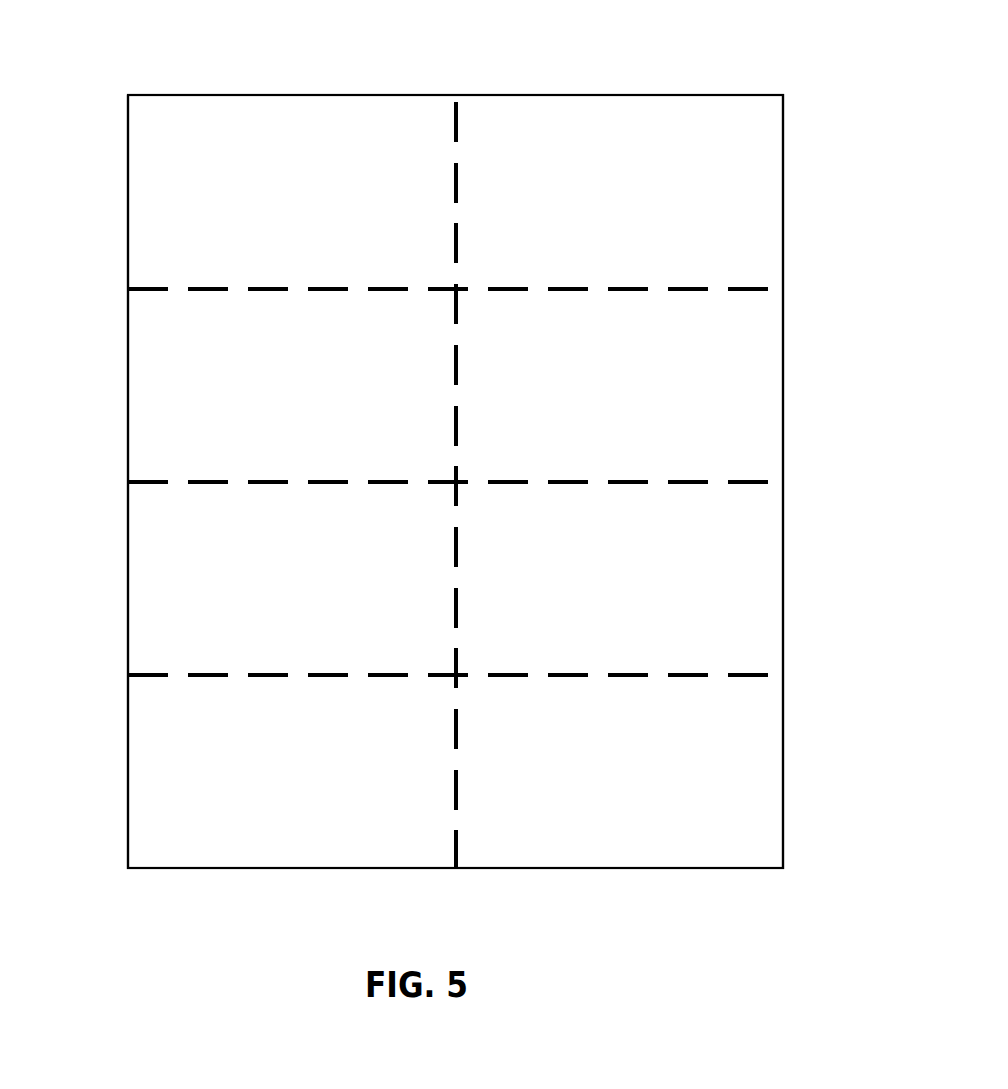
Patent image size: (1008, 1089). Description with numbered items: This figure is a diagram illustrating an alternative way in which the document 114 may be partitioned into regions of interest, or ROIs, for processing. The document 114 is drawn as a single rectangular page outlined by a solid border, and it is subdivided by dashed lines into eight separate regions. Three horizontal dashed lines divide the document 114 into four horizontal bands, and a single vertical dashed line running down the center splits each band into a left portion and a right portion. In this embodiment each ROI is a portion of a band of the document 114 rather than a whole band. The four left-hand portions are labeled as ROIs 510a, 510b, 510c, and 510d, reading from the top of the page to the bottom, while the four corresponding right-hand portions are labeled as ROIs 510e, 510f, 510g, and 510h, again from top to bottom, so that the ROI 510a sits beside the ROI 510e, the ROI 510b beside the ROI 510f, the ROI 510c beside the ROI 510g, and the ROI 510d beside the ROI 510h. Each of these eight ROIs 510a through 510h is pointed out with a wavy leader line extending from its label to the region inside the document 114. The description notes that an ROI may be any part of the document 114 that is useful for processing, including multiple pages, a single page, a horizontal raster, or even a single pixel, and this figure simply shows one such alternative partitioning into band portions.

The document 114 is at (610, 95).
The ROI 510a is at (205, 172).
The ROI 510b is at (205, 368).
The ROI 510c is at (205, 561).
The ROI 510d is at (205, 754).
The ROI 510e is at (725, 173).
The ROI 510f is at (725, 367).
The ROI 510g is at (718, 561).
The ROI 510h is at (723, 753).